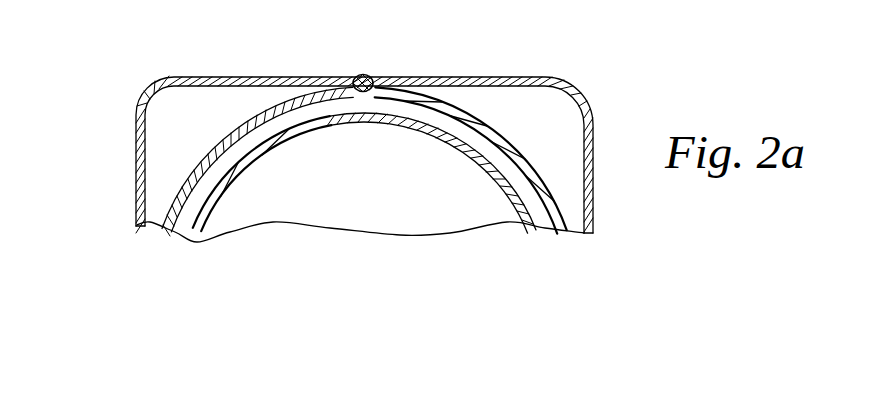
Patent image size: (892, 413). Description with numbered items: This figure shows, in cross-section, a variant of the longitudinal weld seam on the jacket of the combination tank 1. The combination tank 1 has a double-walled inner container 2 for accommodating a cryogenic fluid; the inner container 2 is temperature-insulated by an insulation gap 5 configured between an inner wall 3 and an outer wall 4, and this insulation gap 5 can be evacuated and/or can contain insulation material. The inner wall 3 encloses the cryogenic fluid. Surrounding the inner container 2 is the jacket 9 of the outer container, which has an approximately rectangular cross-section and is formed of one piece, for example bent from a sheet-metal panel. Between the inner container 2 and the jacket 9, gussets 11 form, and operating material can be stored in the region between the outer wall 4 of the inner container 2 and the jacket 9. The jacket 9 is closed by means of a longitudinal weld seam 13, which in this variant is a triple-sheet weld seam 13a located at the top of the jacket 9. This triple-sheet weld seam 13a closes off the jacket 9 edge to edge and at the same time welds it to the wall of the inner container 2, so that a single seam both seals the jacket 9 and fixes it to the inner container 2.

The combination tank 1 is at (155, 68).
The inner container 2 is at (377, 198).
The inner wall 3 is at (220, 188).
The outer wall 4 is at (558, 215).
The insulation gap 5 is at (189, 207).
The jacket 9 is at (581, 96).
The gussets 11 is at (178, 128).
The longitudinal weld seam 13 is at (351, 70).
The triple-sheet weld seam 13a is at (373, 81).